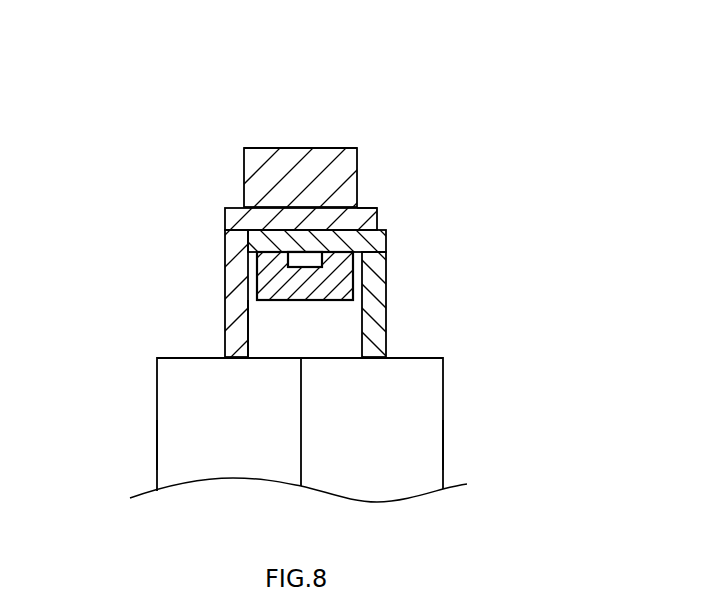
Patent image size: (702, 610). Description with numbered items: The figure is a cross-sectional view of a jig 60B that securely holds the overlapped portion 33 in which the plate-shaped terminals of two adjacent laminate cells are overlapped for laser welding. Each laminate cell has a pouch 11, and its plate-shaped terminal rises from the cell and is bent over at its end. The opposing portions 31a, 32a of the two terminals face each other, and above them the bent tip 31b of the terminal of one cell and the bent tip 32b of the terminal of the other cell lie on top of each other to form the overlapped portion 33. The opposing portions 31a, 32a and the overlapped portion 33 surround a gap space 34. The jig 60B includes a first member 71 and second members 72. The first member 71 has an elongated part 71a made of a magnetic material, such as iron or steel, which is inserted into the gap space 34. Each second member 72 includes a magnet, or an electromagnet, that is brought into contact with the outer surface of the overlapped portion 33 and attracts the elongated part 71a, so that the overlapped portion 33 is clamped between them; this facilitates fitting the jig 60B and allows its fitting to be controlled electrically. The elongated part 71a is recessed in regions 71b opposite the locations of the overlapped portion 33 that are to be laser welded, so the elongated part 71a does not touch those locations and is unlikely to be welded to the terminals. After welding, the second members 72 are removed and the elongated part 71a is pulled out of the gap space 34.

The jig 60B is at (263, 123).
The second member 72 is at (245, 179).
The first member 71 is at (280, 304).
The elongated part 71a is at (323, 314).
The recessed region 71b is at (307, 253).
The overlapped portion 33 is at (366, 205).
The gap space 34 is at (255, 281).
The opposing portion 31a is at (226, 318).
The bent tip 31b is at (371, 207).
The opposing portion 32a is at (385, 313).
The bent tip 32b is at (275, 257).
The pouch 11 is at (155, 442).